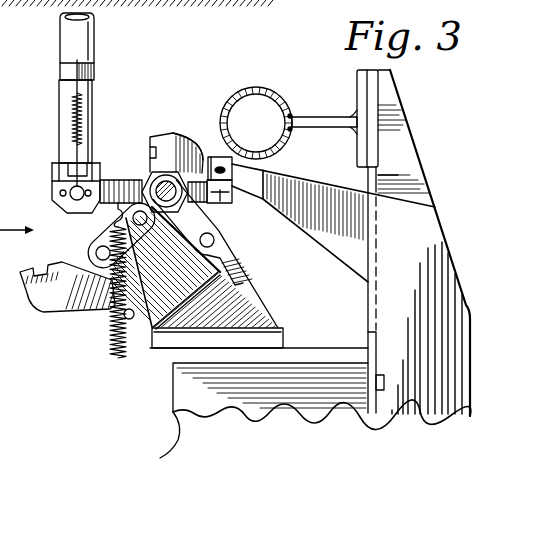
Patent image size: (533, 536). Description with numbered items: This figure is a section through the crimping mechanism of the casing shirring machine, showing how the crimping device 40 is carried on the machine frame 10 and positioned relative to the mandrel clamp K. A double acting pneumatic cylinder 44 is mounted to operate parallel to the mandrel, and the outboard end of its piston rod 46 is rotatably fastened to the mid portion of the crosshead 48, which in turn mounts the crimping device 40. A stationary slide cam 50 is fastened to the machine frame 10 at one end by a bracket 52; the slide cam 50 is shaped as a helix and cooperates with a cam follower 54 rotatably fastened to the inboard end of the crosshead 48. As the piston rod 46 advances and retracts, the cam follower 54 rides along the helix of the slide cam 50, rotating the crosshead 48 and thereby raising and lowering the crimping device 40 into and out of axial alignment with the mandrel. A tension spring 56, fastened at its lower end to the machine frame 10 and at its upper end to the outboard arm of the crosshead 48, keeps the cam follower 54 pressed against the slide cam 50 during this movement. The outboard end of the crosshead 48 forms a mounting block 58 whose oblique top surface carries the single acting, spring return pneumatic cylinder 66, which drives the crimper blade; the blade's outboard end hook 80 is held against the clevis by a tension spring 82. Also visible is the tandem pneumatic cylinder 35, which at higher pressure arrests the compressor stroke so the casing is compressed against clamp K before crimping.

The machine frame 10 is at (180, 433).
The pneumatic cylinder 35 is at (255, 87).
The crimping device 40 is at (90, 102).
The double acting pneumatic cylinder 44 is at (50, 176).
The piston rod 46 is at (210, 215).
The crosshead 48 is at (146, 172).
The slide cam 50 is at (236, 167).
The bracket 52 is at (214, 156).
The cam follower 54 is at (228, 204).
The tension spring 56 is at (110, 390).
The mounting block 58 is at (66, 197).
The pneumatic cylinder 66 is at (66, 42).
The outboard end hook 80 is at (88, 147).
The tension spring 82 is at (72, 117).
The clamp K is at (163, 138).